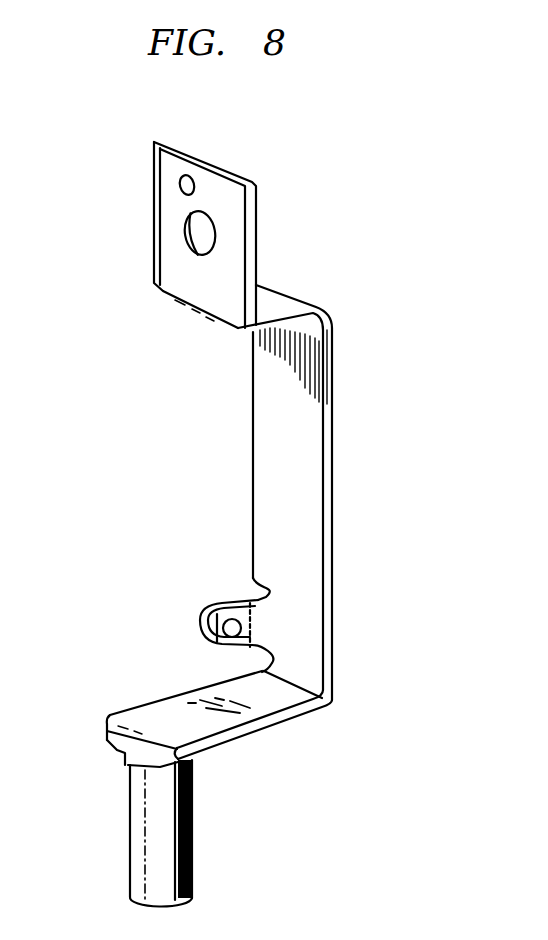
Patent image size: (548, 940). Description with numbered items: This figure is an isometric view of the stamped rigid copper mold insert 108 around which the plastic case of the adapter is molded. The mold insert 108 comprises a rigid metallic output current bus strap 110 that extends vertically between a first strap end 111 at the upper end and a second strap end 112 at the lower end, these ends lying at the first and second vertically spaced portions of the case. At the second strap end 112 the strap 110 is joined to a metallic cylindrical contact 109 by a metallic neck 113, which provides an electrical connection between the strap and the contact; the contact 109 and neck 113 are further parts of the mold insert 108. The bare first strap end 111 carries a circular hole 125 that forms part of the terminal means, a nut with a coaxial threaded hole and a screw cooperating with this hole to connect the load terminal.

The mold insert 108 is at (332, 432).
The cylindrical contact 109 is at (192, 835).
The output current bus strap 110 is at (400, 516).
The first strap end 111 is at (218, 235).
The second strap end 112 is at (258, 735).
The metallic neck 113 is at (128, 763).
The circular hole 125 is at (205, 233).